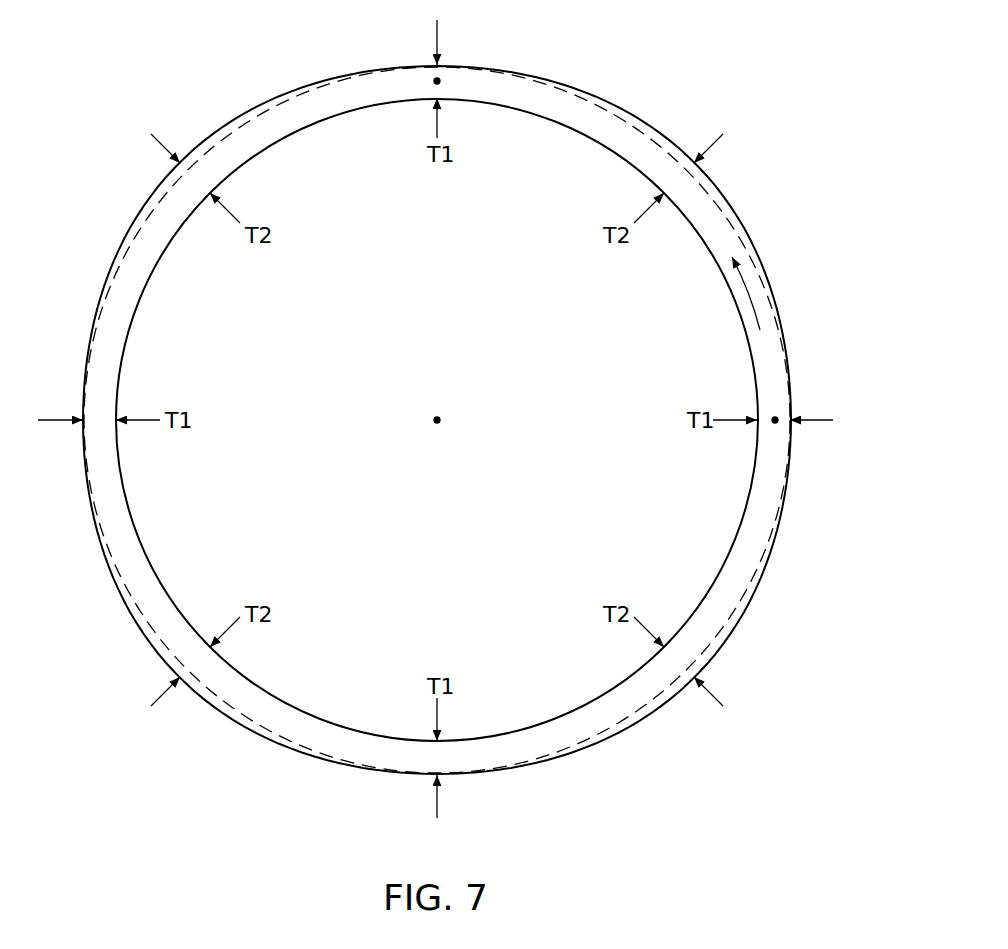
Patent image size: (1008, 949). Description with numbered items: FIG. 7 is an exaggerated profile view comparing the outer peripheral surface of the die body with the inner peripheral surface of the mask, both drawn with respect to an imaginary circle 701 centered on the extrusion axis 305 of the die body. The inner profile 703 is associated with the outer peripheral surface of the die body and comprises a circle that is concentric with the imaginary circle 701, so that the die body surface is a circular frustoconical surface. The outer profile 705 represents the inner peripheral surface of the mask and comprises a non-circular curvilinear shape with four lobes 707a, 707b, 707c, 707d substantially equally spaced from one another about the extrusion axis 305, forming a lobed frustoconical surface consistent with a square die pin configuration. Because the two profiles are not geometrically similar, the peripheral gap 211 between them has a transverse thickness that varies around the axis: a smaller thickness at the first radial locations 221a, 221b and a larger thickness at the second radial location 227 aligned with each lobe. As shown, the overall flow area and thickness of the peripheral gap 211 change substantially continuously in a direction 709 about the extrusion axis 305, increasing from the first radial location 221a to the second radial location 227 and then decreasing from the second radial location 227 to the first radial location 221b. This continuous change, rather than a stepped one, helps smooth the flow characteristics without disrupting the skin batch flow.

The imaginary circle 701 is at (222, 700).
The inner profile 703 is at (136, 528).
The outer profile 705 is at (237, 722).
The lobe 707a is at (690, 680).
The lobe 707b is at (688, 158).
The lobe 707c is at (183, 160).
The lobe 707d is at (160, 652).
The direction 709 is at (752, 298).
The peripheral gap 211 is at (700, 625).
The second radial location 227 is at (678, 178).
The first radial location 221a is at (775, 420).
The first radial location 221b is at (437, 81).
The extrusion axis 305 is at (437, 418).